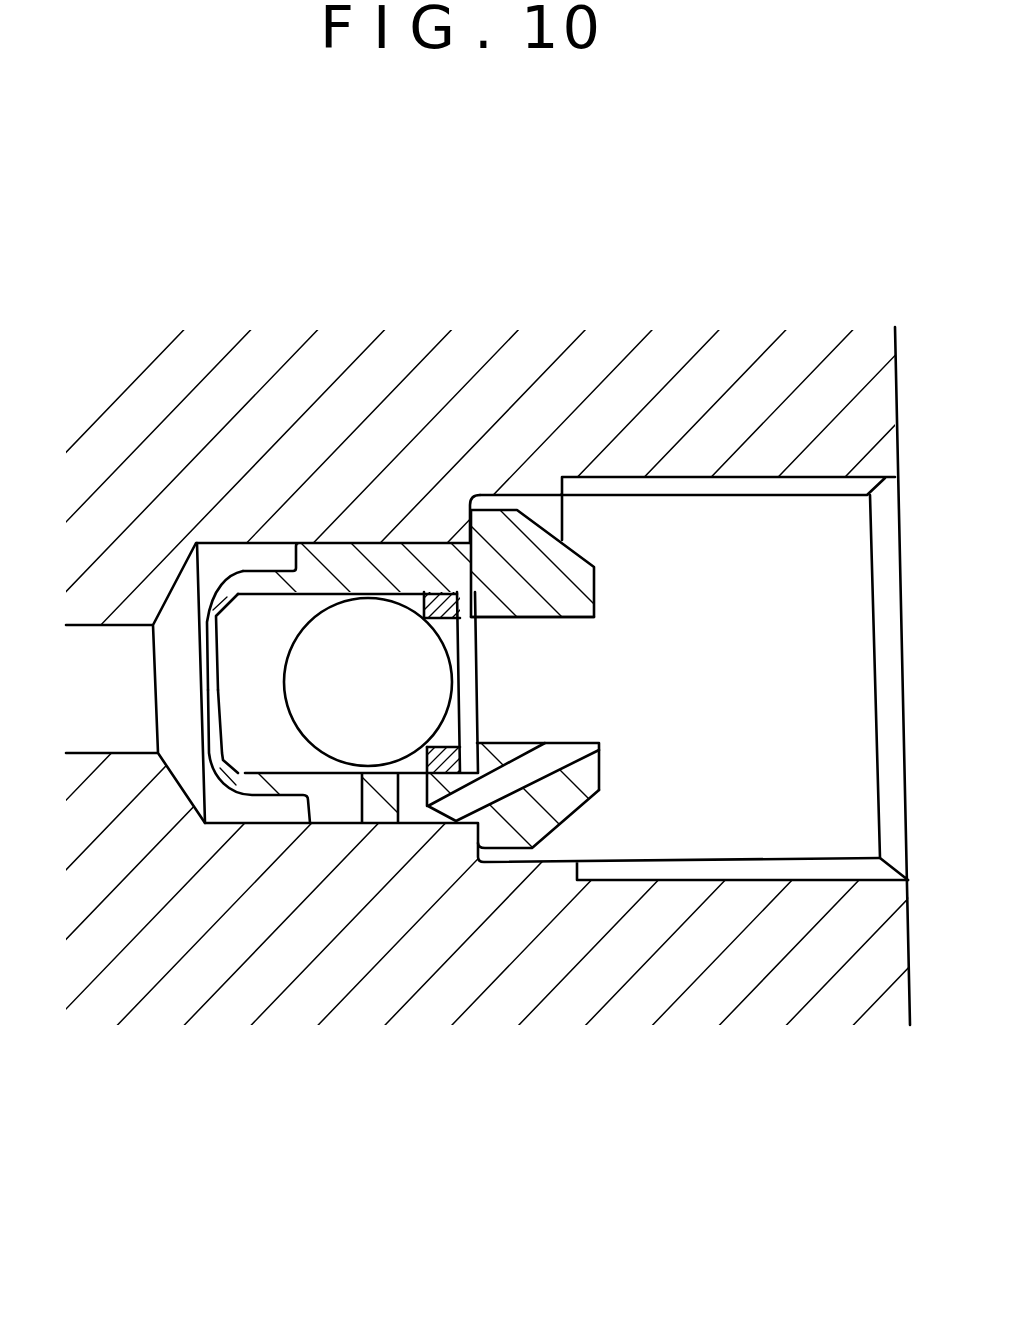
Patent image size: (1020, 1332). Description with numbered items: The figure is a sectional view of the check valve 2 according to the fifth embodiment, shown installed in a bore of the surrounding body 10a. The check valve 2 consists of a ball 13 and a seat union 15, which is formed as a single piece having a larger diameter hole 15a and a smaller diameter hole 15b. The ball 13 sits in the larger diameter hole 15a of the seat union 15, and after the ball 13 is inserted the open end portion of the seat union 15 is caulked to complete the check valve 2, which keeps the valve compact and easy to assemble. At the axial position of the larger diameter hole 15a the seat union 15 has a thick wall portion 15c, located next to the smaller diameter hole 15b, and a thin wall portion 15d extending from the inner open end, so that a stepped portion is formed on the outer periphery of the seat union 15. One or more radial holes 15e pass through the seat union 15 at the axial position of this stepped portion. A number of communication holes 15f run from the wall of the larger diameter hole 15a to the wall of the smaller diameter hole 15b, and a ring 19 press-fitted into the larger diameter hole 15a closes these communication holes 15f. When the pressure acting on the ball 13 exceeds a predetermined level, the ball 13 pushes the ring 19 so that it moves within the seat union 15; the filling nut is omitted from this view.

The check valve 2 is at (208, 938).
The housing wall portion 10a is at (817, 1073).
The ball 13 is at (328, 656).
The seat union 15 is at (537, 820).
The larger diameter hole 15a is at (307, 605).
The smaller diameter hole 15b is at (543, 620).
The thick wall portion 15c is at (432, 563).
The thin wall portion 15d is at (290, 585).
The radial holes 15e is at (338, 806).
The communication holes 15f is at (448, 812).
The ring 19 is at (433, 770).